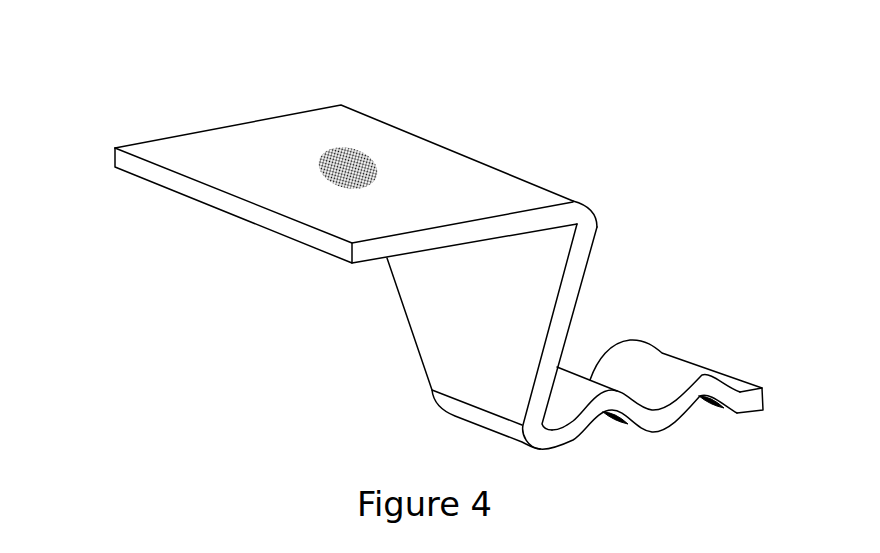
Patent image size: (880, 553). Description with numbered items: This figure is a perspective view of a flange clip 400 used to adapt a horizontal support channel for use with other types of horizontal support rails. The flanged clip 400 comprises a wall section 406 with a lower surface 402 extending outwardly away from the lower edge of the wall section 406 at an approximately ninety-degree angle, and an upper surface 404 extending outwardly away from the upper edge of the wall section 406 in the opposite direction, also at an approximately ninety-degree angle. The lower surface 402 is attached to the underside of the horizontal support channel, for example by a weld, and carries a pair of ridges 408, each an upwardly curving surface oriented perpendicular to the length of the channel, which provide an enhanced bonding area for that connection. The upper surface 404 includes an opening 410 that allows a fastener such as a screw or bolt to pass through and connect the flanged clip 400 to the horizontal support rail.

The flange clip 400 is at (127, 119).
The lower surface 402 is at (655, 415).
The upper surface 404 is at (407, 157).
The wall section 406 is at (448, 305).
The ridge 408 is at (582, 383).
The opening 410 is at (333, 159).